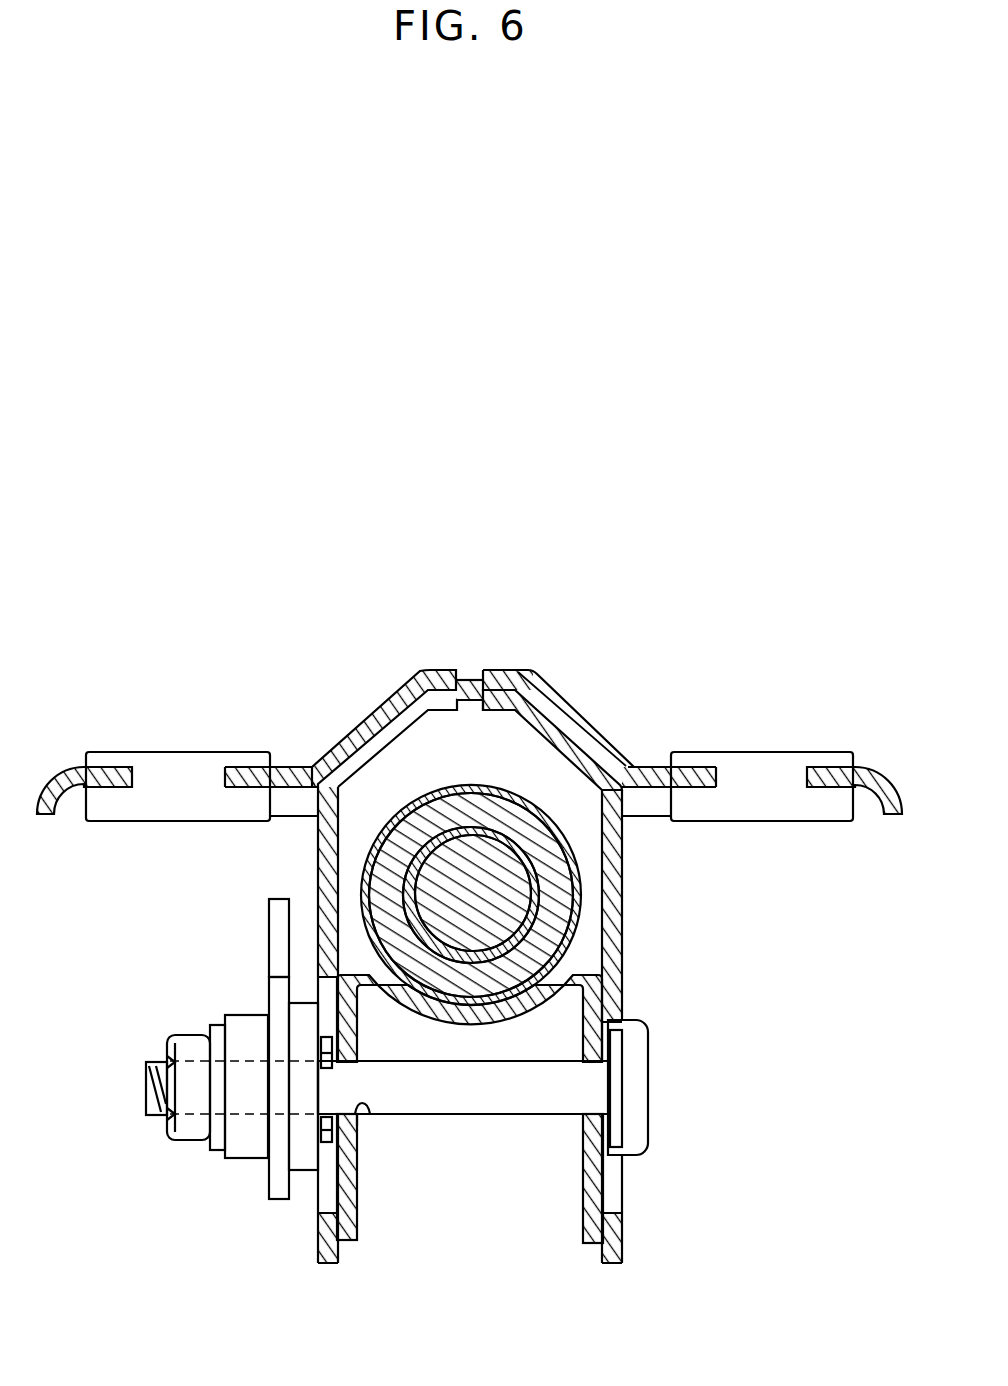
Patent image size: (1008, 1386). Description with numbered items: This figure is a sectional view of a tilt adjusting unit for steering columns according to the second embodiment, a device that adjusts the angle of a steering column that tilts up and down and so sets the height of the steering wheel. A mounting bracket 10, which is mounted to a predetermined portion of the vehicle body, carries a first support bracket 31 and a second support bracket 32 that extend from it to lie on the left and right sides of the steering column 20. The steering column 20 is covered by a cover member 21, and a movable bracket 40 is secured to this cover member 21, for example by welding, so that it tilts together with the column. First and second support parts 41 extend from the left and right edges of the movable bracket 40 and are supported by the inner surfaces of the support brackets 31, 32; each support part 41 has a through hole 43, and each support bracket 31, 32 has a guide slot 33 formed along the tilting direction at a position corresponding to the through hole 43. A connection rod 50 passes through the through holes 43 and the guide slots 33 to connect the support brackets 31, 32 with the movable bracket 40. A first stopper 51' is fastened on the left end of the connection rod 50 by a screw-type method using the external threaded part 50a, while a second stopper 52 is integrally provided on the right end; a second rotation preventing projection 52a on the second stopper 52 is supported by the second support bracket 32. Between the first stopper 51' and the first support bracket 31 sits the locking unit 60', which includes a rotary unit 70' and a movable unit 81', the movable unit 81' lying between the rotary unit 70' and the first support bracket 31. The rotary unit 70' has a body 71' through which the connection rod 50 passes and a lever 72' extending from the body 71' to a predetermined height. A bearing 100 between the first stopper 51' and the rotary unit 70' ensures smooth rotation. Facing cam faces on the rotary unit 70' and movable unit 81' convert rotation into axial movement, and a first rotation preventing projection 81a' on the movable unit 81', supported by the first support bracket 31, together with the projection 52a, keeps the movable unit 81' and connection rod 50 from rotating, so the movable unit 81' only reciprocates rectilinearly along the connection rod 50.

The mounting bracket 10 is at (652, 772).
The steering column 20 is at (560, 884).
The cover member 21 is at (580, 928).
The first support bracket 31 is at (318, 878).
The second support bracket 32 is at (622, 845).
The guide slot 33 is at (614, 1193).
The movable bracket 40 is at (557, 1108).
The first and second support parts 41 is at (355, 1213).
The through hole 43 is at (366, 1104).
The connection rod 50 is at (503, 1110).
The external threaded part 50a is at (154, 1061).
The first stopper 51' is at (141, 1141).
The second stopper 52 is at (689, 1087).
The second rotation preventing projection 52a is at (620, 1072).
The locking unit 60' is at (191, 1123).
The rotary unit 70' is at (219, 1085).
The body 71' is at (253, 1138).
The lever 72' is at (243, 924).
The movable unit 81' is at (304, 1164).
The first rotation preventing projection 81a' is at (420, 1164).
The bearing 100 is at (245, 1158).